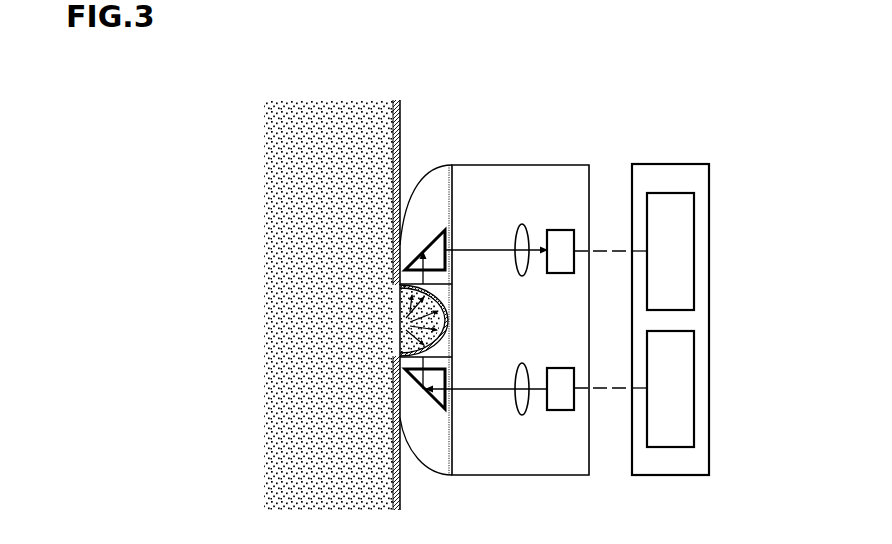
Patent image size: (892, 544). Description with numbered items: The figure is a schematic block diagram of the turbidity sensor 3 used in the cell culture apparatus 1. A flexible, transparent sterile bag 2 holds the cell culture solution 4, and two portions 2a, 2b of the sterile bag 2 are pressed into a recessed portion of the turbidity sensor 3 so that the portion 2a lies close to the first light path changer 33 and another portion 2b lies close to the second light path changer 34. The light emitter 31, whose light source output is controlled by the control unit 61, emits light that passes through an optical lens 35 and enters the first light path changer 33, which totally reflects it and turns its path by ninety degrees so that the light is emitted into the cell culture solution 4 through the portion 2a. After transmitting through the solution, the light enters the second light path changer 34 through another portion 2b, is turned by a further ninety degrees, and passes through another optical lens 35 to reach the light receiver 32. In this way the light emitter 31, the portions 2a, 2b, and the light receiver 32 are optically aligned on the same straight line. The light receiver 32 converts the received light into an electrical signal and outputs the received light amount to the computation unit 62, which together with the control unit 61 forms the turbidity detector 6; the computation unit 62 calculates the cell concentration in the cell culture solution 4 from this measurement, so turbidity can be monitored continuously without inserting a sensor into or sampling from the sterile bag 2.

The cell culture apparatus 1 is at (753, 142).
The sterile bag 2 is at (402, 120).
The portion of the sterile bag 2a is at (448, 350).
The another portion of the sterile bag 2b is at (448, 289).
The turbidity sensor 3 is at (478, 165).
The cell culture solution 4 is at (330, 116).
The turbidity detector 6 is at (670, 164).
The light emitter 31 is at (562, 410).
The light receiver 32 is at (560, 230).
The first light path changer 33 is at (425, 411).
The second light path changer 34 is at (428, 229).
The optical lens 35 is at (522, 224).
The control unit 61 is at (709, 388).
The computation unit 62 is at (709, 251).